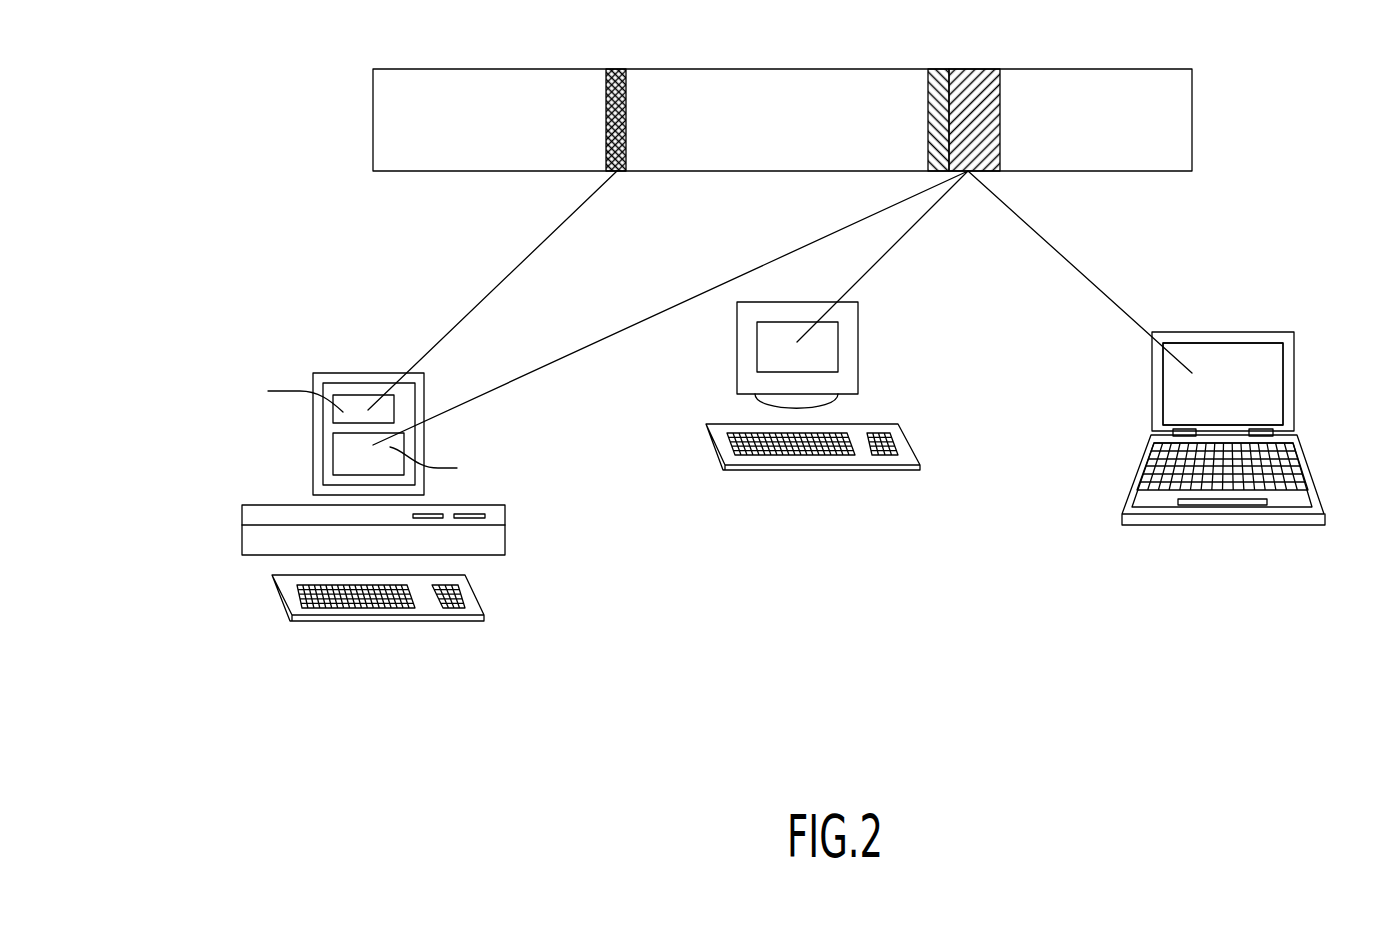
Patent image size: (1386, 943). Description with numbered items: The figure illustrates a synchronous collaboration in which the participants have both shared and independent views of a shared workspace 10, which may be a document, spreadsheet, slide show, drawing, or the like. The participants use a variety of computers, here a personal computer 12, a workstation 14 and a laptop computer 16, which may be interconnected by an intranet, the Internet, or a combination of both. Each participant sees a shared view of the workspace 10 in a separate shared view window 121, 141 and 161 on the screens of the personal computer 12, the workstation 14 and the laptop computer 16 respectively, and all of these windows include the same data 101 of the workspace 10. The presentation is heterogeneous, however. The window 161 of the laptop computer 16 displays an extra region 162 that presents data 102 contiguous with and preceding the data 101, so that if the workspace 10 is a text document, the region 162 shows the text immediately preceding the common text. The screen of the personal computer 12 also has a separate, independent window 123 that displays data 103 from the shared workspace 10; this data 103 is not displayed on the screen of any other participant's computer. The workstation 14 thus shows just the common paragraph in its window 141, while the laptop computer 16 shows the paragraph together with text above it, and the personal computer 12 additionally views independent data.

The shared workspace 10 is at (657, 68).
The shared data 101 is at (1001, 89).
The contiguous data 102 is at (928, 114).
The independent data 103 is at (627, 112).
The personal computer 12 is at (353, 373).
The shared view window 121 is at (365, 443).
The independent window 123 is at (353, 402).
The workstation 14 is at (758, 302).
The shared view window 141 is at (818, 355).
The laptop computer 16 is at (1238, 332).
The shared view window 161 is at (1267, 360).
The extra region 162 is at (1262, 413).